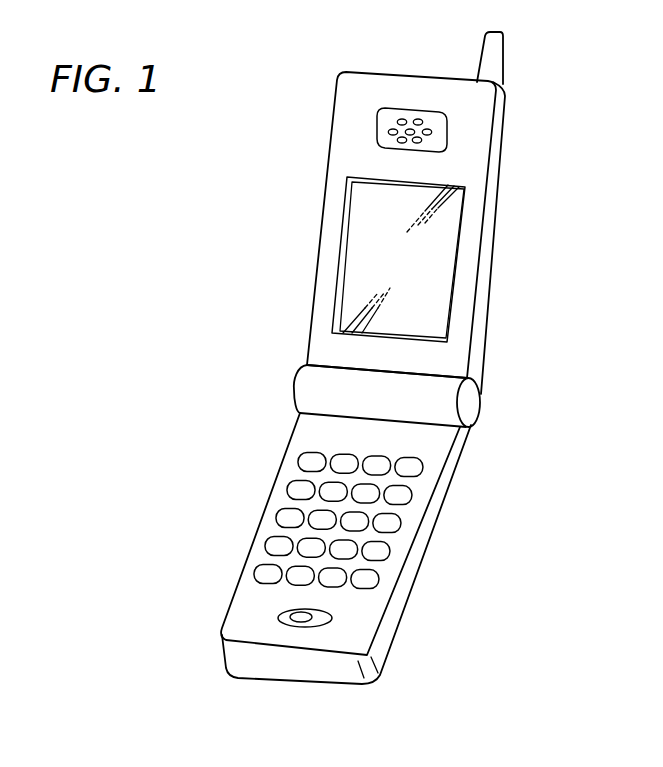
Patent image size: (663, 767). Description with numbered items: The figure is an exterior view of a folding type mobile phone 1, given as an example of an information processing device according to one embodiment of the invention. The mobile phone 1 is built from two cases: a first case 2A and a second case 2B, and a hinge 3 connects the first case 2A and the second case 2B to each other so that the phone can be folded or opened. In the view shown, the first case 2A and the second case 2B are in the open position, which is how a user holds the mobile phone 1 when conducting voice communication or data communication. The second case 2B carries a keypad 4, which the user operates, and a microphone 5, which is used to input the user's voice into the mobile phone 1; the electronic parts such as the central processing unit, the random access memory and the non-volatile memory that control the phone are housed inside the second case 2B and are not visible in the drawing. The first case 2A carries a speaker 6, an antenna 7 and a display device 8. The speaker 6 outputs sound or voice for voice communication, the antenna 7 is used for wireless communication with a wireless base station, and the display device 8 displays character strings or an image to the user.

The mobile phone 1 is at (238, 386).
The first case 2A is at (495, 186).
The second case 2B is at (393, 607).
The hinge 3 is at (465, 404).
The keypad 4 is at (290, 443).
The microphone 5 is at (297, 620).
The speaker 6 is at (382, 135).
The antenna 7 is at (490, 62).
The display device 8 is at (358, 260).